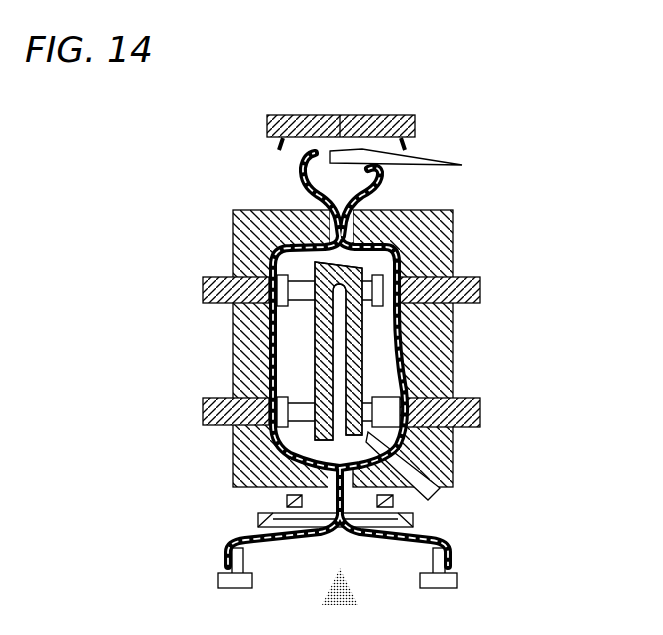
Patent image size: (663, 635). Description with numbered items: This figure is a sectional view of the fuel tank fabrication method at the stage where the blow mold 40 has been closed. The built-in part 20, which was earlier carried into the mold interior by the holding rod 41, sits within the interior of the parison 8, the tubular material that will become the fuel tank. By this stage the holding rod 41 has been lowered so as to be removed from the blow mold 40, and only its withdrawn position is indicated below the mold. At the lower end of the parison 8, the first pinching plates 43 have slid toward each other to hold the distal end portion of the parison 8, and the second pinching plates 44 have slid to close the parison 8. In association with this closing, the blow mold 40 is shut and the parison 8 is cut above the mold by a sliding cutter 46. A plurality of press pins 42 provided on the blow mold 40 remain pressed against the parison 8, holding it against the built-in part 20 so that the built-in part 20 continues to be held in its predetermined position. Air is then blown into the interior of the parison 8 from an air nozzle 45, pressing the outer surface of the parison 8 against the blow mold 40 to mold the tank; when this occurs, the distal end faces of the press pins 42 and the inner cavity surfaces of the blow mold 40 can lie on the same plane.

The blow mold 40 is at (218, 237).
The press pins 42 is at (203, 289).
The built-in part 20 is at (315, 348).
The parison 8 is at (402, 342).
The sliding cutter 46 is at (462, 166).
The second pinching plates 44 is at (287, 504).
The first pinching plates 43 is at (414, 519).
The air nozzle 45 is at (455, 500).
The holding rod 41 is at (357, 600).